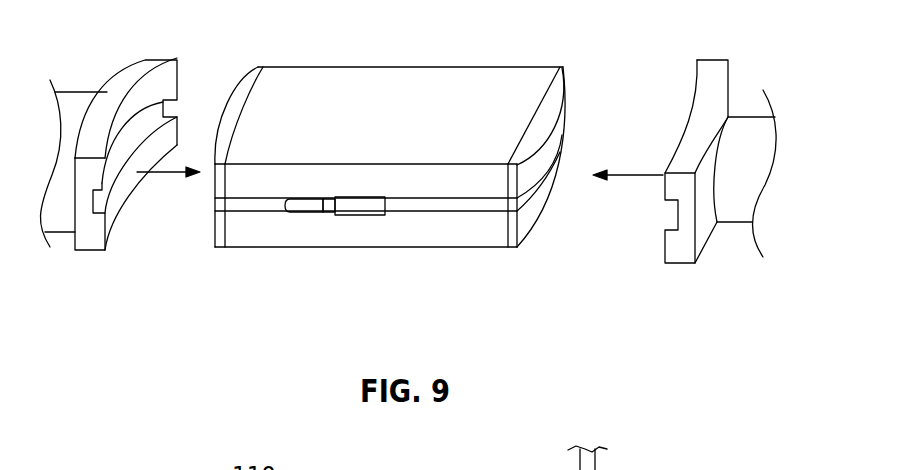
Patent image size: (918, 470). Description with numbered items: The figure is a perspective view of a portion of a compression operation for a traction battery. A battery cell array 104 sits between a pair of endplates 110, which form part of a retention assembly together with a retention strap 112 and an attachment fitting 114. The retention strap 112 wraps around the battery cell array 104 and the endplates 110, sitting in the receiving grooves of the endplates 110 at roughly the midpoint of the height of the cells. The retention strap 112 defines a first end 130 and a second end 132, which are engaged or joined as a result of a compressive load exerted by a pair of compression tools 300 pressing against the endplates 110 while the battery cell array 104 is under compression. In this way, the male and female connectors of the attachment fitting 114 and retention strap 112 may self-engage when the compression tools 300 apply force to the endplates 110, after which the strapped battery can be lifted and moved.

The compression tool 300 is at (122, 100).
The battery cell array 104 is at (420, 97).
The endplate 110 is at (238, 100).
The retention strap 112 is at (437, 213).
The first end 130 is at (308, 212).
The second end 132 is at (323, 212).
The attachment fitting 114 is at (358, 207).